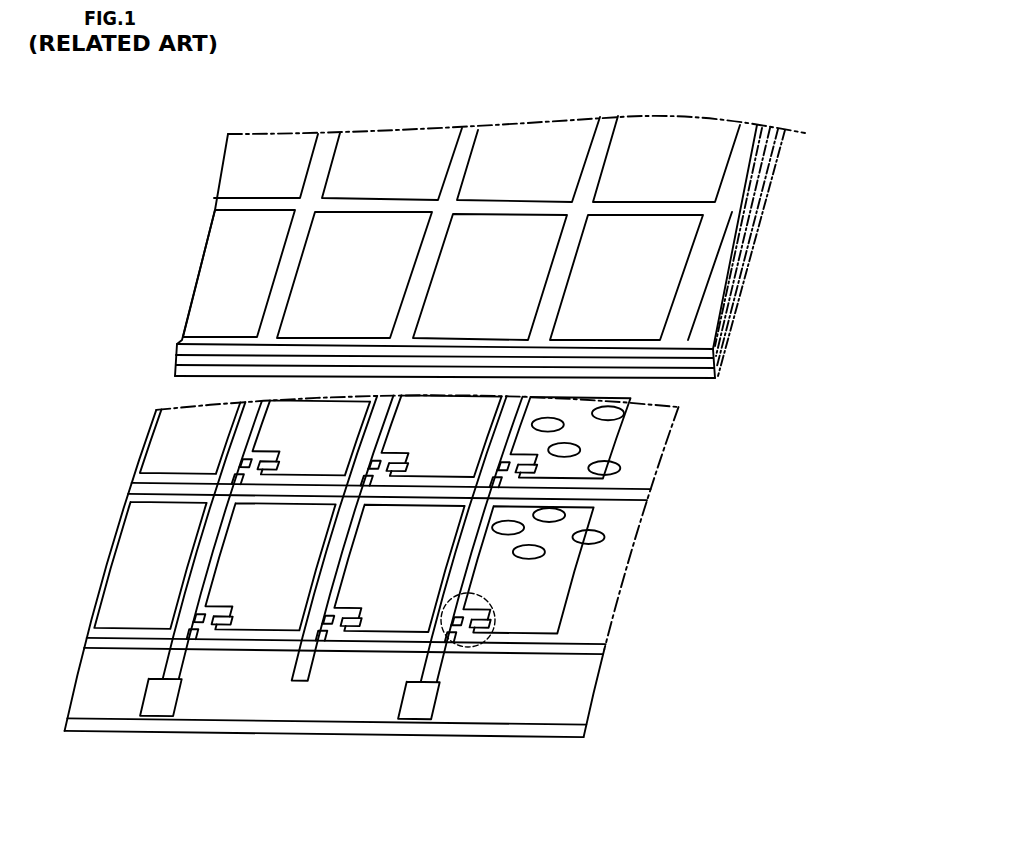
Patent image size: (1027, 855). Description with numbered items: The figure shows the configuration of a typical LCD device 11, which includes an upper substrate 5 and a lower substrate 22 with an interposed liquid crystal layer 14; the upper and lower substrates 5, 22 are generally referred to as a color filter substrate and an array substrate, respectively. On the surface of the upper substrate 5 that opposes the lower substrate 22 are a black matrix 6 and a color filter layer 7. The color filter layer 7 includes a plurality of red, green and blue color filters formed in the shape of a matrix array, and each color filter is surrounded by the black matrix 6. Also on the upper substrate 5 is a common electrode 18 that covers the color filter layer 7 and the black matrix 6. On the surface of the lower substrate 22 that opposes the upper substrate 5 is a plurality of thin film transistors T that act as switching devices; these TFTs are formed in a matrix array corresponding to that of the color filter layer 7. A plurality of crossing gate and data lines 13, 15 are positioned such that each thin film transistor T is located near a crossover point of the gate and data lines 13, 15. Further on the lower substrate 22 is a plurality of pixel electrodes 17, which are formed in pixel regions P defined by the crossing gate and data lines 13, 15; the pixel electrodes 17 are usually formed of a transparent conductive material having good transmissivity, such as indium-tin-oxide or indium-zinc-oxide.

The upper substrate 5 is at (697, 360).
The black matrix 6 is at (727, 208).
The color filter layer 7 is at (693, 260).
The common electrode 18 is at (716, 380).
The LCD device 11 is at (768, 604).
The gate line 13 is at (568, 647).
The liquid crystal layer 14 is at (600, 467).
The data line 15 is at (420, 674).
The pixel electrode 17 is at (572, 587).
The lower substrate 22 is at (557, 733).
The pixel region P is at (605, 570).
The thin film transistor T is at (487, 643).